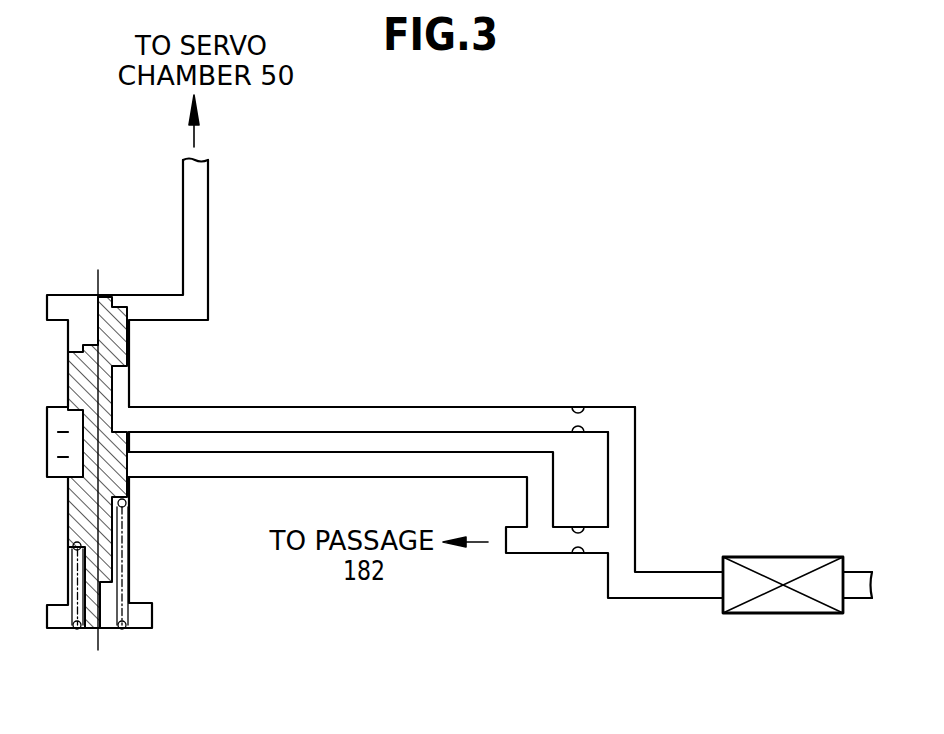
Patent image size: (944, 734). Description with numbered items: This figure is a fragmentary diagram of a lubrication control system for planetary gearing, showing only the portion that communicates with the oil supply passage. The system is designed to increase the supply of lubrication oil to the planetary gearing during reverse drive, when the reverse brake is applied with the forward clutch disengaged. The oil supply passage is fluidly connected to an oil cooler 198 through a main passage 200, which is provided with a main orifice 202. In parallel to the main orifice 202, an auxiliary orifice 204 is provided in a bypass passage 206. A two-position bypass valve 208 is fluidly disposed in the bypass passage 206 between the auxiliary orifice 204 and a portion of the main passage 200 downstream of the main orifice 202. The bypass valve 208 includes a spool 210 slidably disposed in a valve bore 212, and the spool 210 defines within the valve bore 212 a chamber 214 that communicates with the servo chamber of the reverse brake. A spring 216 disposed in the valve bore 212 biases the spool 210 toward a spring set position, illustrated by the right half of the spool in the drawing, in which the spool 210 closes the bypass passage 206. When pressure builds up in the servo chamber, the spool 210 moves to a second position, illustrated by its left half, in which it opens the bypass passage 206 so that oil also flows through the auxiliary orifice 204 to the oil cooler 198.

The oil cooler 198 is at (770, 614).
The main passage 200 is at (605, 541).
The main orifice 202 is at (570, 545).
The auxiliary orifice 204 is at (593, 410).
The bypass passage 206 is at (530, 407).
The two-position bypass valve 208 is at (60, 368).
The spool 210 is at (117, 348).
The valve bore 212 is at (76, 508).
The chamber 214 is at (78, 331).
The spring 216 is at (121, 593).